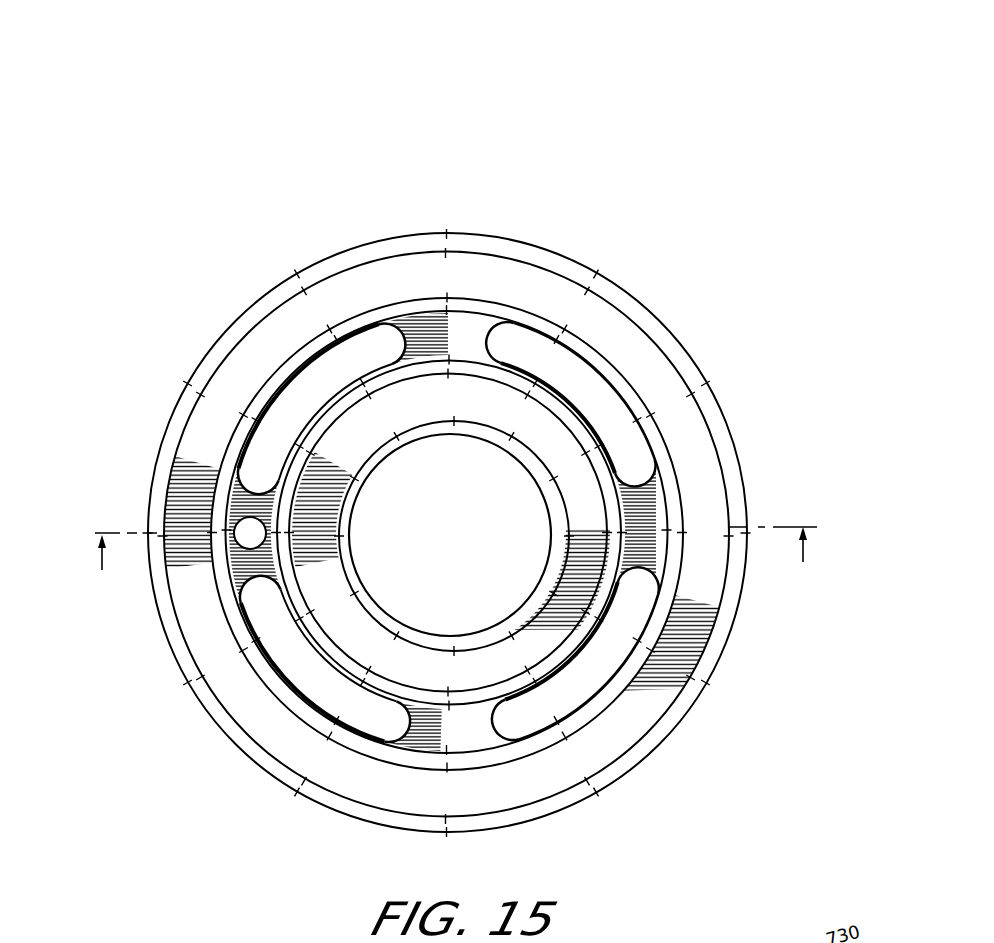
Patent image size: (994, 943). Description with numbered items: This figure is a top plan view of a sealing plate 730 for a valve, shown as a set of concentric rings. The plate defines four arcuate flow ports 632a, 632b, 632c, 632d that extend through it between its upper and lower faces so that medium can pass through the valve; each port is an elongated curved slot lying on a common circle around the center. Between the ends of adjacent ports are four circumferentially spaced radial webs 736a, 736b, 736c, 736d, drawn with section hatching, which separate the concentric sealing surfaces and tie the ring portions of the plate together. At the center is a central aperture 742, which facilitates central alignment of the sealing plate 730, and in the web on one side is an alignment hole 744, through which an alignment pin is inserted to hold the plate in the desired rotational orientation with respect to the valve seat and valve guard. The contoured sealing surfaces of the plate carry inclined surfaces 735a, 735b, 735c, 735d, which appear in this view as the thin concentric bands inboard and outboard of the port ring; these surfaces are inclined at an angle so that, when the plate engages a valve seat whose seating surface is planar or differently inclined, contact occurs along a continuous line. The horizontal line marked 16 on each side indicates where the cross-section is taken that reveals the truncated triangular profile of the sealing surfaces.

The sealing plate 730 is at (657, 113).
The inclined surface 735a is at (495, 427).
The inclined surface 735b is at (543, 393).
The inclined surface 735c is at (630, 397).
The inclined surface 735d is at (693, 367).
The radial web 736a is at (655, 515).
The radial web 736b is at (455, 332).
The radial web 736c is at (232, 498).
The radial web 736d is at (422, 752).
The arcuate flow port 632a is at (570, 404).
The arcuate flow port 632b is at (321, 408).
The arcuate flow port 632c is at (325, 659).
The arcuate flow port 632d is at (575, 653).
The central aperture 742 is at (450, 535).
The alignment hole 744 is at (252, 540).
The section line 16 is at (456, 571).